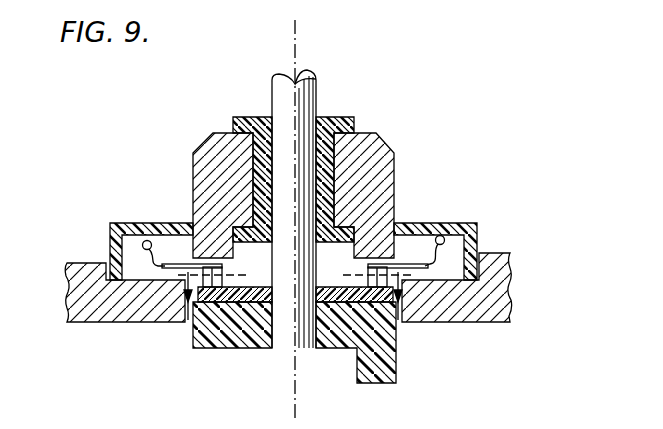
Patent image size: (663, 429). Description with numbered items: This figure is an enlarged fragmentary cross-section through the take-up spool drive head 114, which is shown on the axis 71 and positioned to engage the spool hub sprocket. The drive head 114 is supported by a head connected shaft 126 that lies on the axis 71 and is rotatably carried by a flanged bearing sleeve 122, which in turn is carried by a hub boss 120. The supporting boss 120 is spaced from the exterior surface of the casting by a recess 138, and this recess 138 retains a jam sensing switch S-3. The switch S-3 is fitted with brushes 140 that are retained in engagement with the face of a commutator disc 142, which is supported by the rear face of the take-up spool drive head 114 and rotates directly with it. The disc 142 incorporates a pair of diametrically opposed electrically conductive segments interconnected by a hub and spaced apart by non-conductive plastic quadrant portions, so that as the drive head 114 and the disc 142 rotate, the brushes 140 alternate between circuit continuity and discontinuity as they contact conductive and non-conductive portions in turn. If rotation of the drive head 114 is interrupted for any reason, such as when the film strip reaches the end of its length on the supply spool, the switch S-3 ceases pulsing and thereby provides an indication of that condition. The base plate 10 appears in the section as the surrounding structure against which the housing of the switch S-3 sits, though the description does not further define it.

The axis 71 is at (298, 35).
The head connected shaft 126 is at (305, 103).
The flanged bearing sleeve 122 is at (361, 134).
The hub boss 120 is at (370, 167).
The brushes 140 is at (213, 277).
The jam sensing switch S-3 is at (443, 221).
The base plate 10 is at (288, 287).
The recess 138 is at (188, 320).
The commutator disc 142 is at (228, 294).
The take-up spool drive head 114 is at (352, 338).